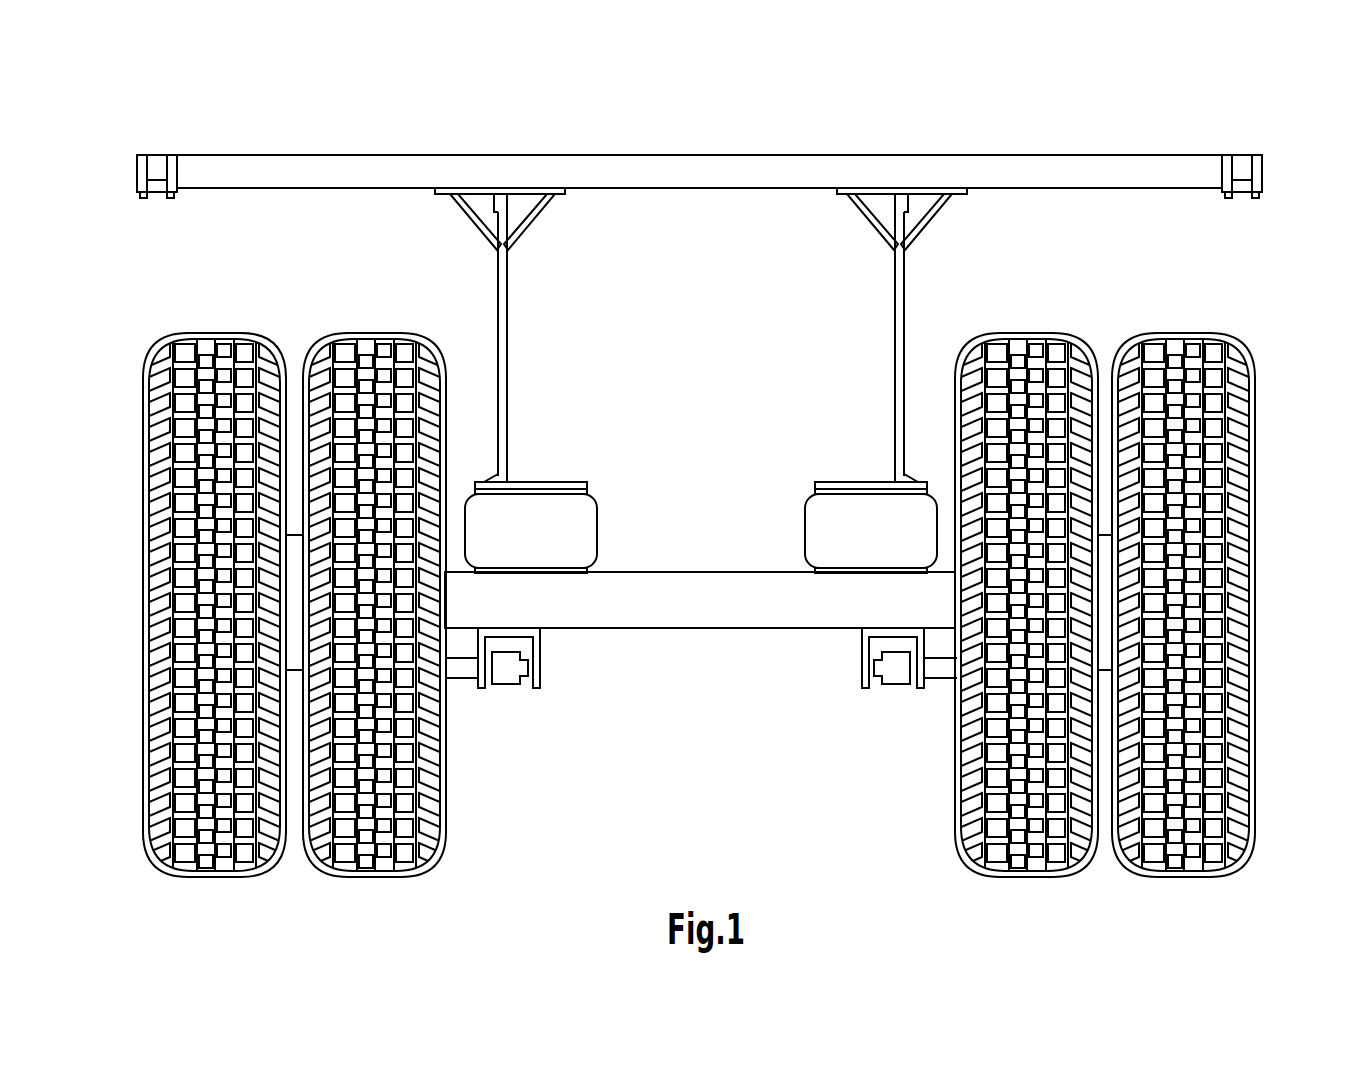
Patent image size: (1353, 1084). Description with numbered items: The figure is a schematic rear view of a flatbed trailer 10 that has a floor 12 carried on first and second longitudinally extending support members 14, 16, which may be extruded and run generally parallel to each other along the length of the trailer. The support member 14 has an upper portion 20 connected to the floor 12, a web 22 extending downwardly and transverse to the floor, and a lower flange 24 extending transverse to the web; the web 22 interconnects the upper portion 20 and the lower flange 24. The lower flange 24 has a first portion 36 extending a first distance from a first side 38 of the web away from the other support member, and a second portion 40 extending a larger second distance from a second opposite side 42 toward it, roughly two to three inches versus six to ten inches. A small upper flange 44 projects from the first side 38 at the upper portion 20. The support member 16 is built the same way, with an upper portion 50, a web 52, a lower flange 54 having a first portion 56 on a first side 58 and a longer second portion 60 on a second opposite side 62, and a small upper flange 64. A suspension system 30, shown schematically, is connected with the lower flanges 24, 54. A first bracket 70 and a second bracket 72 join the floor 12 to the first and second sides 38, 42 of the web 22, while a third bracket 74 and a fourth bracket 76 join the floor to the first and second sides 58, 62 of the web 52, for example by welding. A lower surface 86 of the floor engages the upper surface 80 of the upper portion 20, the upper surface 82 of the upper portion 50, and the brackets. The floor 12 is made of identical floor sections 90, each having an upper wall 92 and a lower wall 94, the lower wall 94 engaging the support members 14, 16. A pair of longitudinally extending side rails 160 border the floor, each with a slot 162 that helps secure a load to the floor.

The flatbed trailer 10 is at (1283, 153).
The floor 12 is at (1110, 152).
The first longitudinally extending support member 14 is at (508, 359).
The second longitudinally extending support member 16 is at (893, 336).
The upper portion 20 is at (517, 193).
The web 22 is at (503, 305).
The lower flange 24 is at (540, 480).
The suspension system 30 is at (173, 325).
The first portion 36 is at (485, 475).
The first side 38 is at (497, 348).
The second portion 40 is at (580, 483).
The second opposite side 42 is at (509, 402).
The upper flange 44 is at (492, 193).
The upper portion 50 is at (892, 193).
The web 52 is at (903, 300).
The lower flange 54 is at (838, 478).
The first portion 56 is at (910, 478).
The first side 58 is at (906, 362).
The second portion 60 is at (862, 478).
The second opposite side 62 is at (894, 398).
The upper flange 64 is at (910, 193).
The first bracket 70 is at (465, 205).
The second bracket 72 is at (540, 203).
The third bracket 74 is at (952, 200).
The fourth bracket 76 is at (865, 212).
The upper surface 80 is at (500, 193).
The upper surface 82 is at (899, 193).
The lower surface 86 is at (1155, 190).
The floor section 90 is at (315, 152).
The upper wall 92 is at (1024, 150).
The lower wall 94 is at (1077, 190).
The side rail 160 is at (135, 169).
The slot 162 is at (163, 157).